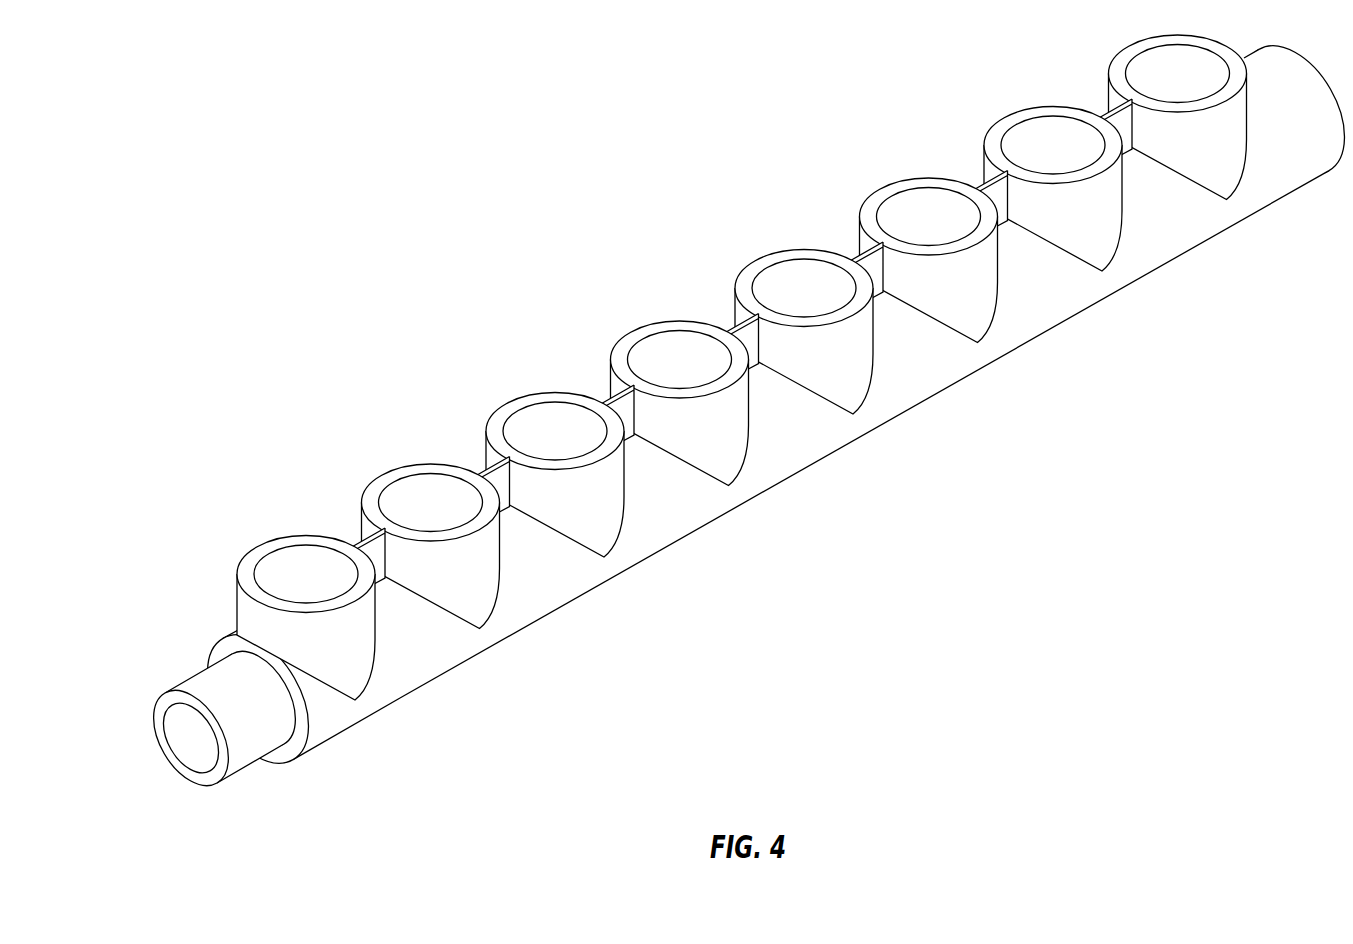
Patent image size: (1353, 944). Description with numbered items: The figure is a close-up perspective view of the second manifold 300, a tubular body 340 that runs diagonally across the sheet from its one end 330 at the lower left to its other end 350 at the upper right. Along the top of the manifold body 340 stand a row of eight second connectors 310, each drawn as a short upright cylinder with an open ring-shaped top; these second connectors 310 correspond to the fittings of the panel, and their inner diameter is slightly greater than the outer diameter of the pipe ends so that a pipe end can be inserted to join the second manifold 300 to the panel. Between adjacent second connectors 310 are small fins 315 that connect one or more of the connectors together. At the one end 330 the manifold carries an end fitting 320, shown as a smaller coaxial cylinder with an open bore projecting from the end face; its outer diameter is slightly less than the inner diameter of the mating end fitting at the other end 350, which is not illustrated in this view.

The second manifold 300 is at (745, 416).
The second connectors 310 is at (255, 608).
The fins 315 is at (502, 488).
The end fitting 320 is at (203, 688).
The one end 330 is at (341, 734).
The tube body 340 is at (810, 463).
The other end 350 is at (1288, 187).